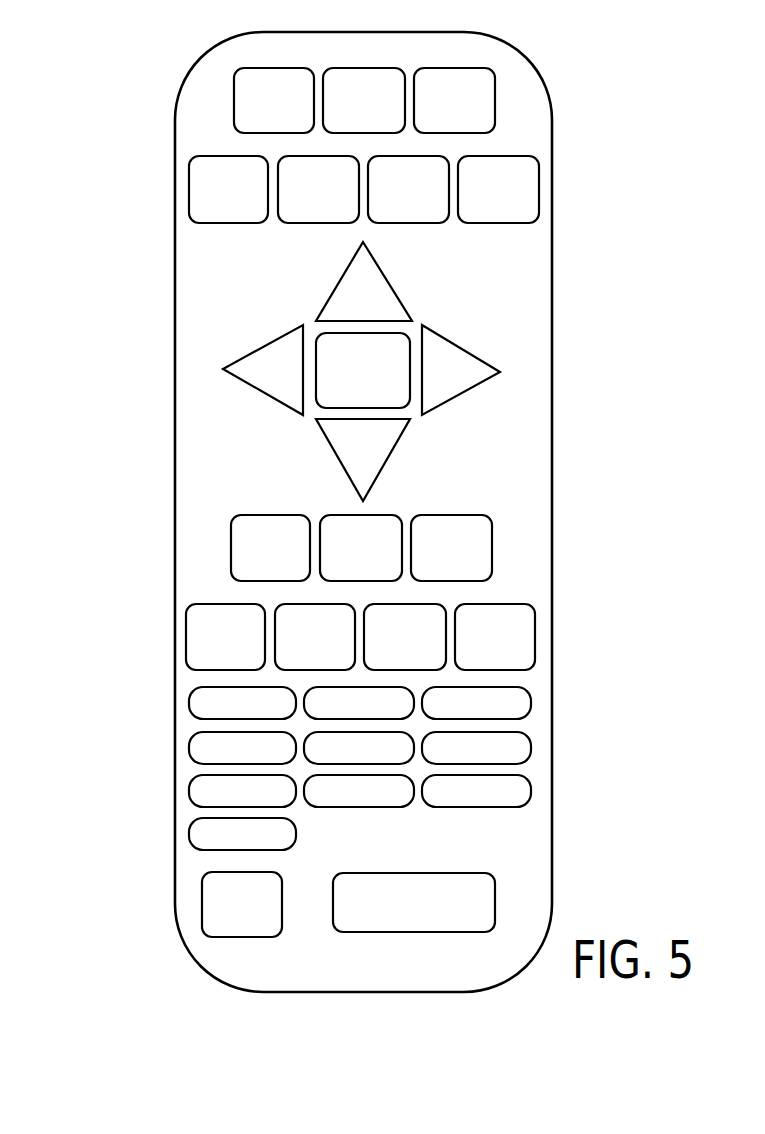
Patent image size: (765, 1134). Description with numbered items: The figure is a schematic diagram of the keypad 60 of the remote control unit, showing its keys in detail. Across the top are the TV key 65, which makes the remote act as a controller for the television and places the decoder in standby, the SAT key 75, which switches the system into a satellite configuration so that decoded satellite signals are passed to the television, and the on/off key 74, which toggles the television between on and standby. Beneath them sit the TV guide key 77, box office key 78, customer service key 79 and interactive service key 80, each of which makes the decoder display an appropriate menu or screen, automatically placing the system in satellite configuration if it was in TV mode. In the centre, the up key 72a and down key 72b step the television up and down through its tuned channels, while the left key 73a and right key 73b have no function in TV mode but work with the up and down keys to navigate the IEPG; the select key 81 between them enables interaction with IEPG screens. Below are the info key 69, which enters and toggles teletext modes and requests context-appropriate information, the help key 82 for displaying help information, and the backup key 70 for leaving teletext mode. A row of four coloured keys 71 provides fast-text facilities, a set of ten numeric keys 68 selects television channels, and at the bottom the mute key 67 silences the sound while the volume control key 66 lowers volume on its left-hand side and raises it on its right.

The keypad 60 is at (185, 453).
The TV key 65 is at (242, 86).
The volume control key 66 is at (480, 903).
The mute key 67 is at (210, 897).
The numeric keys 68 is at (159, 750).
The info key 69 is at (237, 538).
The backup key 70 is at (488, 550).
The coloured keys 71 is at (155, 618).
The up key 72a is at (390, 306).
The down key 72b is at (352, 467).
The left key 73a is at (260, 362).
The right key 73b is at (467, 377).
The on/off key 74 is at (488, 88).
The SAT key 75 is at (338, 78).
The TV guide key 77 is at (197, 184).
The box office key 78 is at (307, 215).
The customer service key 79 is at (420, 215).
The interactive service key 80 is at (533, 208).
The select key 81 is at (325, 398).
The help key 82 is at (387, 523).